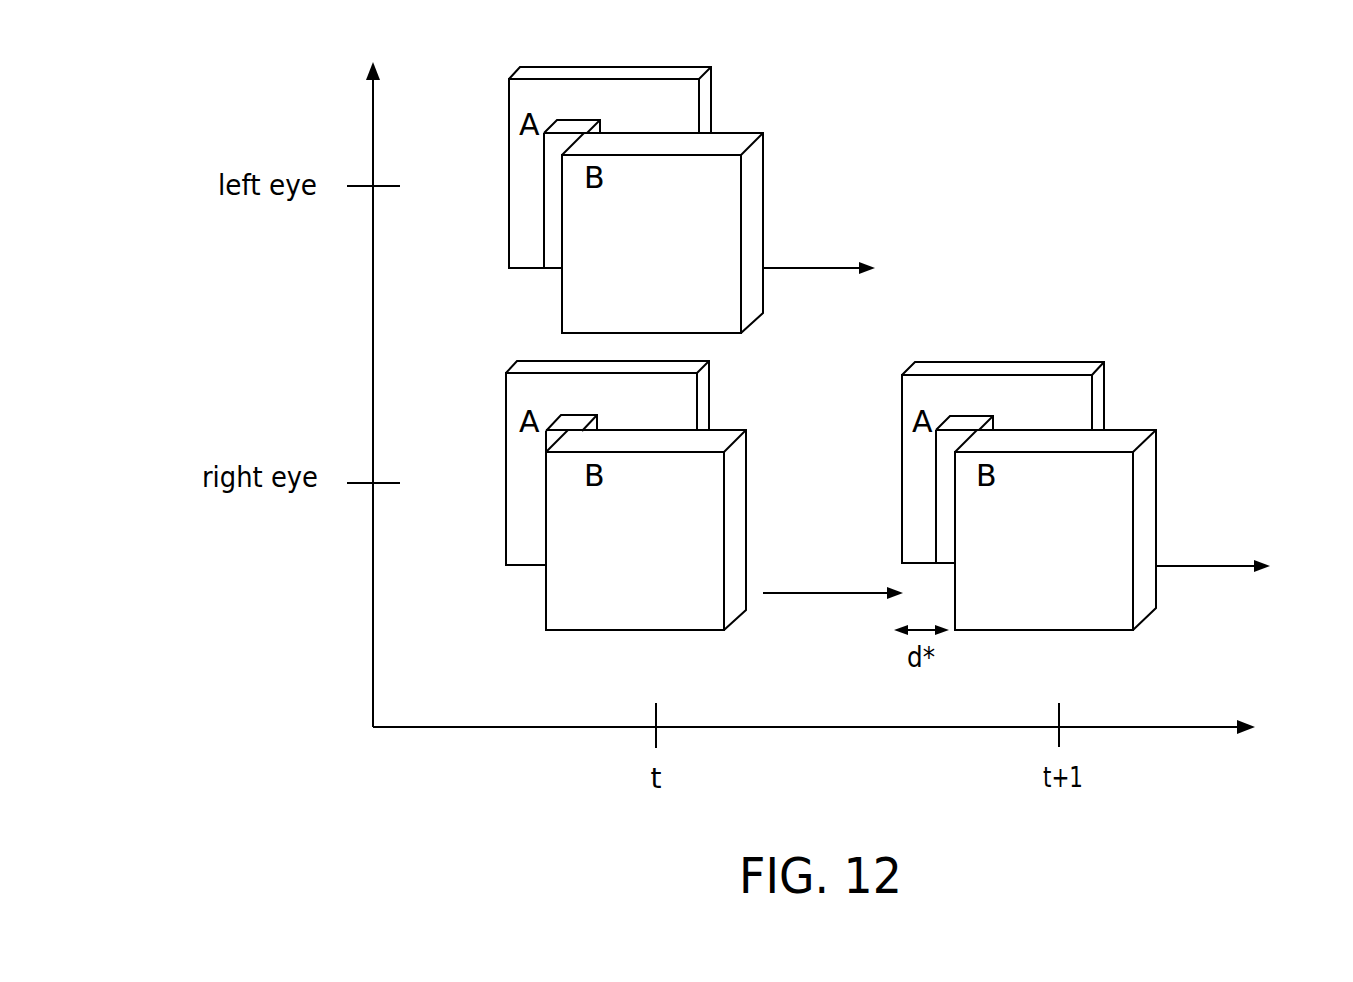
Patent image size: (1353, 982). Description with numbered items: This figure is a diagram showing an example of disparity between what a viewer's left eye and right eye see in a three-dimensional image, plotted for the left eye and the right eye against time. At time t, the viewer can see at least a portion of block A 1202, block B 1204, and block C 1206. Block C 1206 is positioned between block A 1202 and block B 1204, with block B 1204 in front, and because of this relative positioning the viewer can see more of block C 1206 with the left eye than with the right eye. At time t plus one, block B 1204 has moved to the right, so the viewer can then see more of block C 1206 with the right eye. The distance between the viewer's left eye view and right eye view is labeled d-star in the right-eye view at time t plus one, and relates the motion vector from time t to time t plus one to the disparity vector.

The block A 1202 is at (580, 67).
The block B 1204 is at (741, 133).
The block C 1206 is at (557, 146).